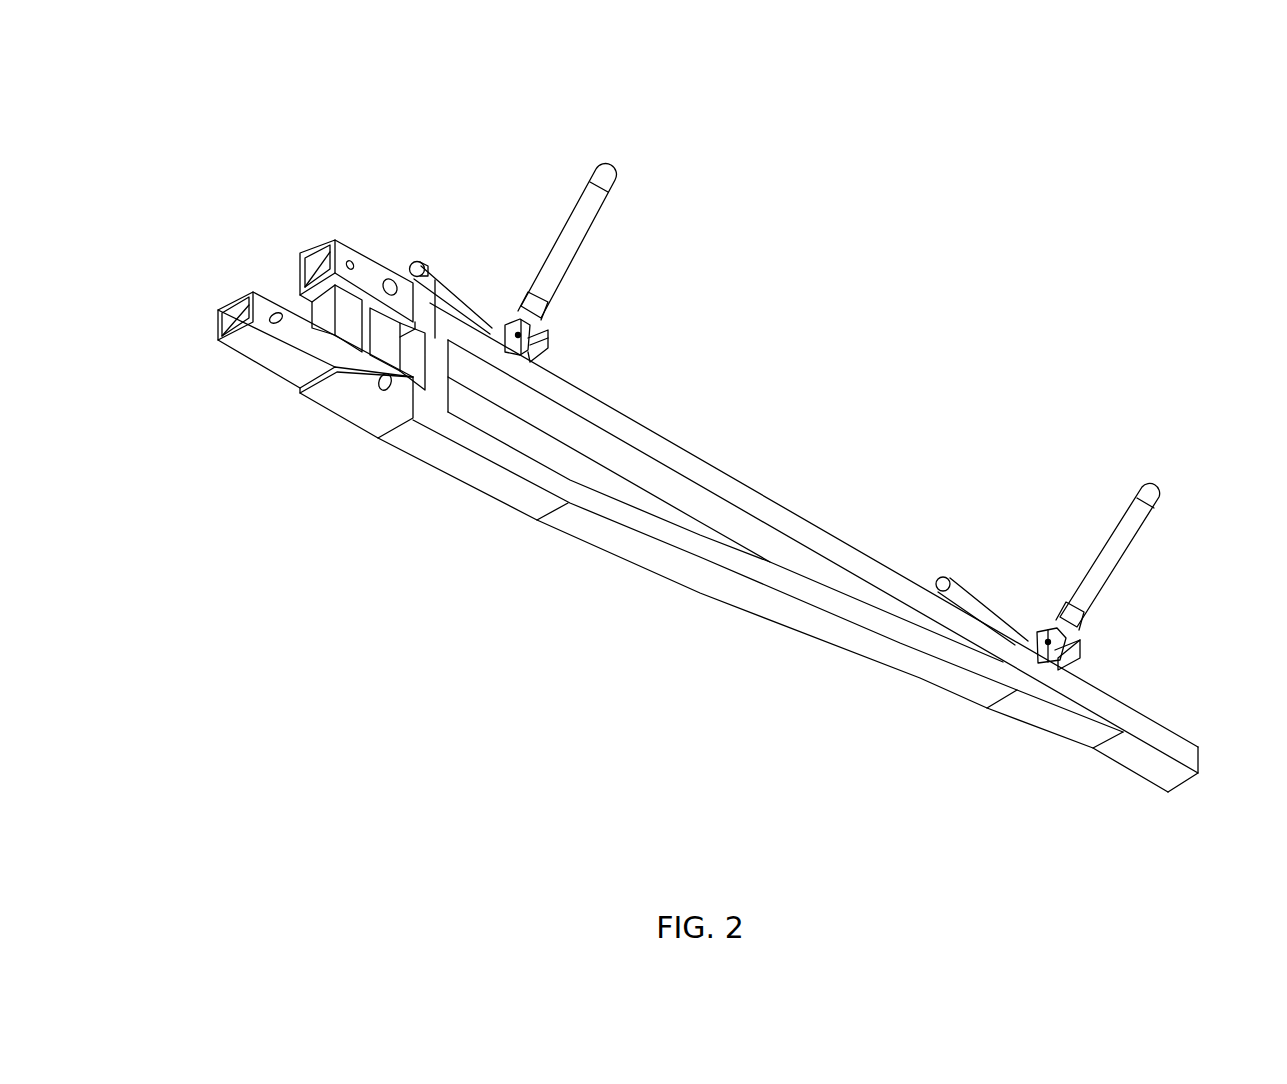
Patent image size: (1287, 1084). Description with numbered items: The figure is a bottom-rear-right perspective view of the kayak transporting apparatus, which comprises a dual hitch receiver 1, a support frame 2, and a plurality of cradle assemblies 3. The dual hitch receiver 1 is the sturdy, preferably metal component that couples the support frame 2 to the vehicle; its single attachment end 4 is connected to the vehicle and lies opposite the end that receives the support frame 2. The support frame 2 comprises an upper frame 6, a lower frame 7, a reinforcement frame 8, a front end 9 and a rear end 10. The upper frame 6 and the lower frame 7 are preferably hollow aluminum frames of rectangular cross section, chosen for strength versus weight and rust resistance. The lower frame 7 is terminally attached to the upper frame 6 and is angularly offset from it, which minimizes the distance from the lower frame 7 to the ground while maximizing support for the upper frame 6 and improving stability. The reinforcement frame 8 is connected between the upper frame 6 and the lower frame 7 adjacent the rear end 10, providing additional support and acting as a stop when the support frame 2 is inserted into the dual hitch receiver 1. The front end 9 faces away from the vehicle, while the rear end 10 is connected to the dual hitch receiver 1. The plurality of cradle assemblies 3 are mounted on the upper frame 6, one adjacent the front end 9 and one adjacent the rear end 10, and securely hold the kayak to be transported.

The dual hitch receiver 1 is at (335, 393).
The support frame 2 is at (814, 563).
The plurality of cradle assemblies 3 is at (507, 246).
The single attachment end 4 is at (217, 333).
The upper frame 6 is at (720, 476).
The lower frame 7 is at (700, 582).
The reinforcement frame 8 is at (437, 335).
The front end 9 is at (1184, 792).
The rear end 10 is at (442, 476).